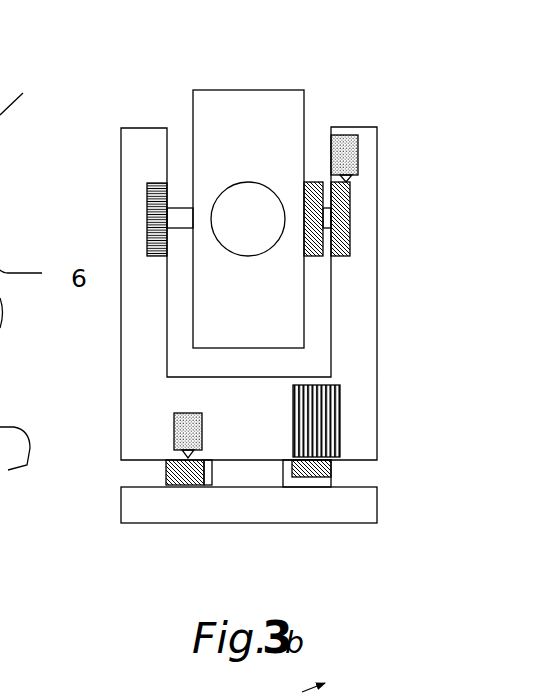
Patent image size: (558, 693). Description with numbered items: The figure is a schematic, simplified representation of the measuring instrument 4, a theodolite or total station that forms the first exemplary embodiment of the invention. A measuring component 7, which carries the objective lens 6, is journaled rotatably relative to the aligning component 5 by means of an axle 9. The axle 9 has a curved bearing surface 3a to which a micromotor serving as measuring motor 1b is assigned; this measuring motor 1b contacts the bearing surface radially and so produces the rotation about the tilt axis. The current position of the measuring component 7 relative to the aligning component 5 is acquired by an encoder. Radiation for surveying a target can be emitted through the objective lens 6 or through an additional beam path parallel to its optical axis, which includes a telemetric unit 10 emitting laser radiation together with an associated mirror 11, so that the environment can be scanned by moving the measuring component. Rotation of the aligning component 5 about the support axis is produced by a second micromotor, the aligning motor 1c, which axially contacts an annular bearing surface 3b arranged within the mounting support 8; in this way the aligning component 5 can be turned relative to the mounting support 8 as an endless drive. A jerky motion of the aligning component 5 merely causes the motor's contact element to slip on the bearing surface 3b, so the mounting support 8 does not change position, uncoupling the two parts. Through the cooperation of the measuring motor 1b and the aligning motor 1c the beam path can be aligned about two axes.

The measuring instrument 4 is at (91, 124).
The aligning component 5 is at (150, 294).
The objective lens 6 is at (245, 215).
The measuring component 7 is at (229, 143).
The mounting support 8 is at (305, 507).
The axle 9 is at (175, 218).
The telemetric unit 10 is at (328, 397).
The mirror 11 is at (323, 258).
The measuring motor 1b is at (347, 148).
The aligning motor 1c is at (187, 436).
The curved bearing surface 3a is at (348, 205).
The annular bearing surface 3b is at (183, 477).